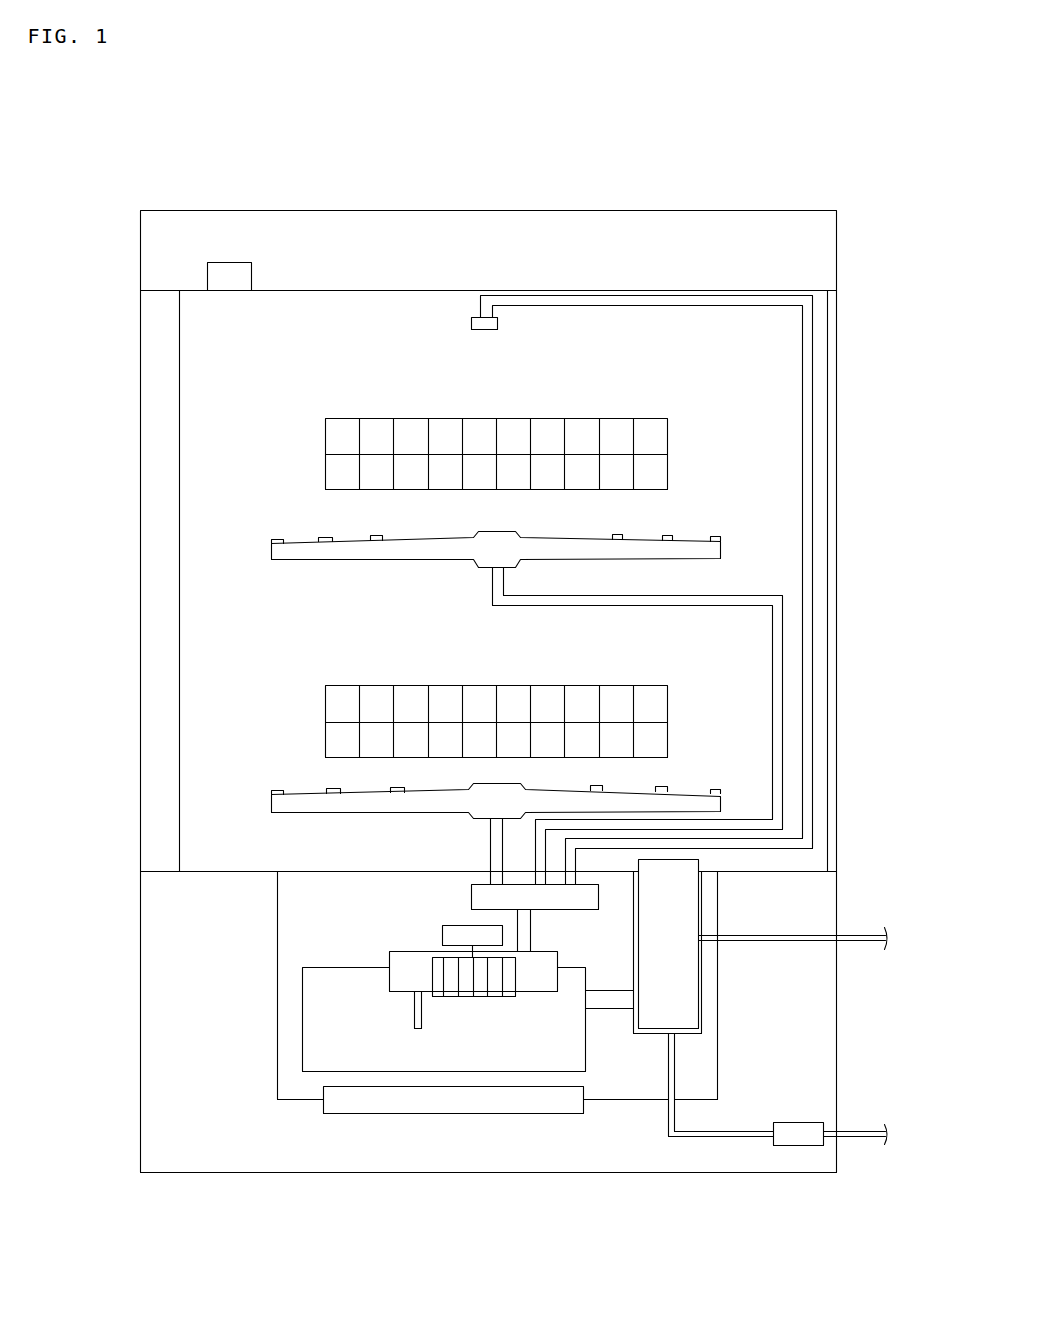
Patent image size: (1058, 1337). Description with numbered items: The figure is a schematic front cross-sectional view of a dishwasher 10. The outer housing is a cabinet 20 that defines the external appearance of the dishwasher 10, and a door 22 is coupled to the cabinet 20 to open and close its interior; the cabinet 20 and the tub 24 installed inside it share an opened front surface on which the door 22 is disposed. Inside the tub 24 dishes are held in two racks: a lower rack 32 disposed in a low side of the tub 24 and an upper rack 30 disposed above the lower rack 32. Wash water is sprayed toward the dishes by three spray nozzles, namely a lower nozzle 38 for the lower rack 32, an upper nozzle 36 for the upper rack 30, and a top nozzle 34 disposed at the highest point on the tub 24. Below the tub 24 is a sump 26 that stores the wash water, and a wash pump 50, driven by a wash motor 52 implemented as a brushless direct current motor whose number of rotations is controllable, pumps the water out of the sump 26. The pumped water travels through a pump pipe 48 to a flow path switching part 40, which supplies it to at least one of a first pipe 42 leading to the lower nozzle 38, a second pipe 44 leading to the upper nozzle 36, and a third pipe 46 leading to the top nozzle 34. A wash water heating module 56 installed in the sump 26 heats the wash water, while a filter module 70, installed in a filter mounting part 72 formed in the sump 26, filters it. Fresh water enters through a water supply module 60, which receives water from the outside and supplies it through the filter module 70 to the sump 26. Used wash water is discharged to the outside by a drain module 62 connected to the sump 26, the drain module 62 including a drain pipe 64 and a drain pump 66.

The dishwasher 10 is at (118, 129).
The cabinet 20 is at (808, 228).
The door 22 is at (150, 393).
The tub 24 is at (828, 435).
The sump 26 is at (270, 1090).
The upper rack 30 is at (340, 699).
The lower rack 32 is at (340, 473).
The top nozzle 34 is at (498, 322).
The upper nozzle 36 is at (720, 548).
The lower nozzle 38 is at (722, 803).
The flow path switching part 40 is at (600, 895).
The first pipe 42 is at (490, 838).
The second pipe 44 is at (782, 712).
The third pipe 46 is at (812, 608).
The pump pipe 48 is at (530, 930).
The wash pump 50 is at (399, 993).
The wash motor 52 is at (445, 938).
The wash water heating module 56 is at (425, 1114).
The water supply module 60 is at (803, 935).
The drain module 62 is at (800, 1228).
The drain pipe 64 is at (727, 1134).
The drain pump 66 is at (798, 1134).
The filter module 70 is at (683, 1002).
The filter mounting part 72 is at (700, 1025).